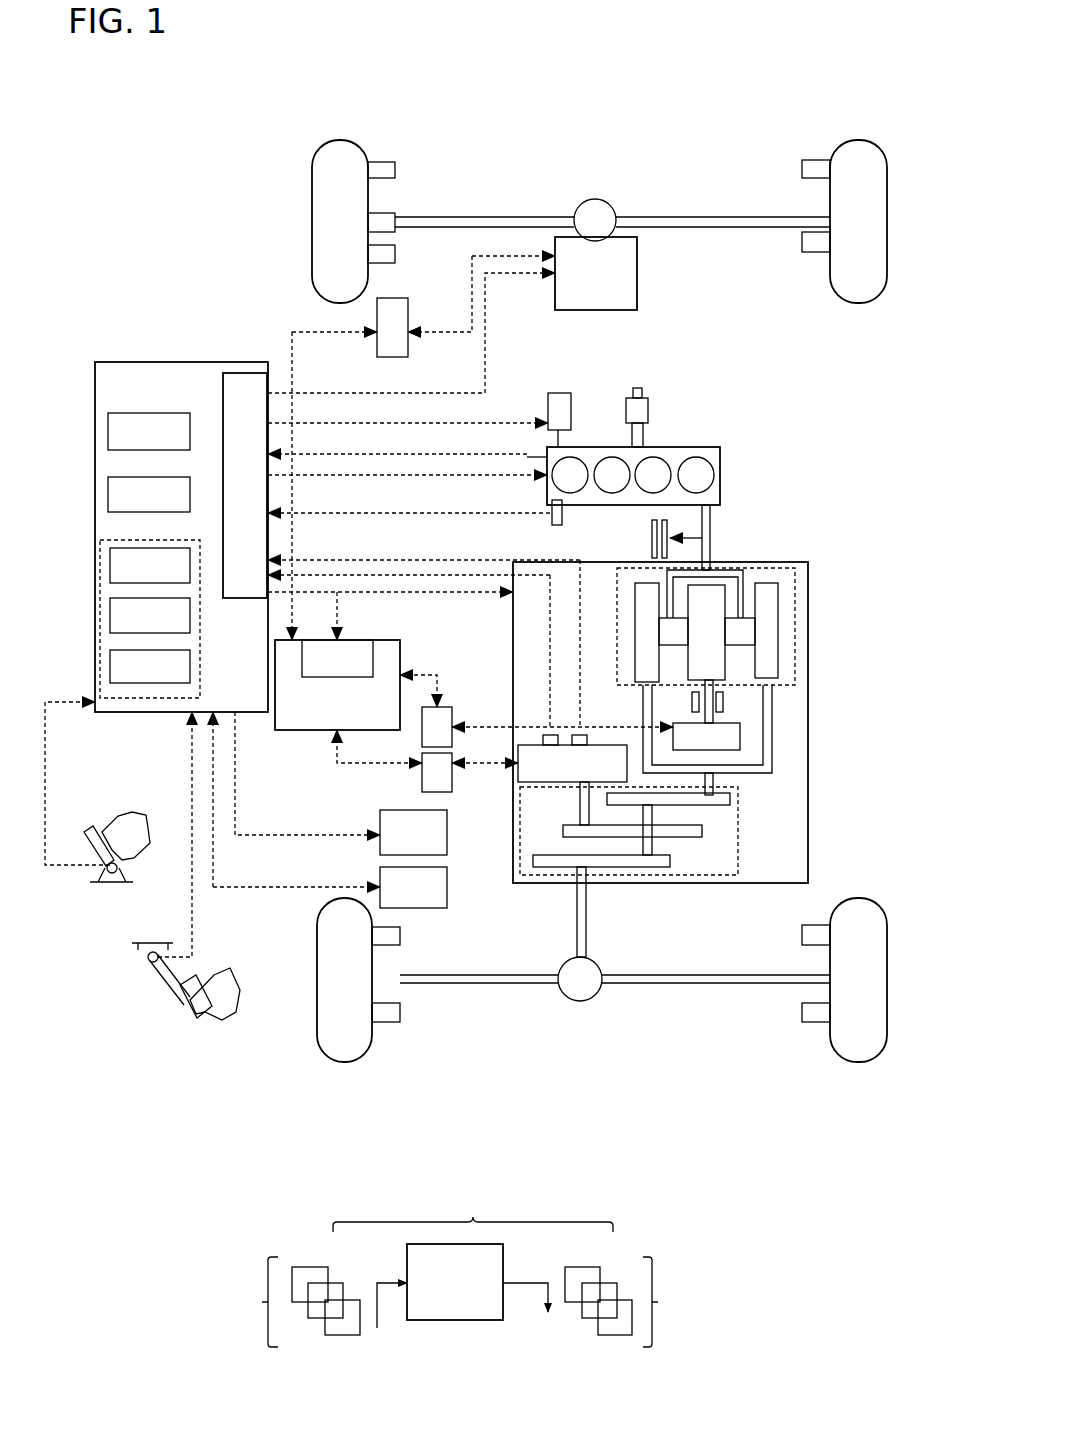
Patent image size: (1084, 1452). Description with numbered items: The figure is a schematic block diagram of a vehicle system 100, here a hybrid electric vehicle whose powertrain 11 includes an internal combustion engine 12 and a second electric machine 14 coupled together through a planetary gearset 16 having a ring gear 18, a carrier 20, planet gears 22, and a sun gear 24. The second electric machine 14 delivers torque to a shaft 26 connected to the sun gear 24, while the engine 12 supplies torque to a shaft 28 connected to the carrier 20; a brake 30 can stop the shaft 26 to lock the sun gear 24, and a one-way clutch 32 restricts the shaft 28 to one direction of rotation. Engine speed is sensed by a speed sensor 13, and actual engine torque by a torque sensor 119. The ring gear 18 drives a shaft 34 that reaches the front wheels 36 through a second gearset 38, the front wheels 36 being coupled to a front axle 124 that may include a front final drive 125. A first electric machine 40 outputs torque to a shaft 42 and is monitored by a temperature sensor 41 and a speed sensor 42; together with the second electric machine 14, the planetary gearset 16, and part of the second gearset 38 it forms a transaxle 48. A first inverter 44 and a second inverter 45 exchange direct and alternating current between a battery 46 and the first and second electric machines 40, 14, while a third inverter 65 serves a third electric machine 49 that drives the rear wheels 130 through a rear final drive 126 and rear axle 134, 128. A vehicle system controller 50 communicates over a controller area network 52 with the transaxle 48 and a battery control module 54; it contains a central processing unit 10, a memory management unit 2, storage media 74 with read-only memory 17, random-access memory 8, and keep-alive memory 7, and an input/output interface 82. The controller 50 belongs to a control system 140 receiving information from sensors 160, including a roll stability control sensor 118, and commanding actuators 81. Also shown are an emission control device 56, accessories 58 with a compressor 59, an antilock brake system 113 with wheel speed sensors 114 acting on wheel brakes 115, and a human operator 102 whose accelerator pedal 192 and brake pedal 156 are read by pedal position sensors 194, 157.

The vehicle system 100 is at (848, 32).
The vehicle powertrain 11 is at (905, 415).
The internal combustion engine 12 is at (710, 447).
The speed sensor 13 is at (527, 457).
The second electric machine 14 is at (742, 735).
The planetary gearset 16 is at (795, 598).
The ring gear 18 is at (778, 660).
The carrier 20 is at (735, 568).
The planet gears 22 is at (745, 635).
The sun gear 24 is at (762, 680).
The shaft 26 is at (750, 725).
The shaft 28 is at (710, 530).
The brake 30 is at (767, 708).
The one-way clutch 32 is at (652, 538).
The shaft 34 is at (713, 785).
The front wheels 36 is at (317, 960).
The second gearset 38 is at (738, 852).
The first electric machine 40 is at (518, 772).
The temperature sensor 41 is at (548, 735).
The speed sensor 42 is at (582, 735).
The first inverter 44 is at (422, 767).
The second inverter 45 is at (450, 707).
The battery 46 is at (302, 731).
The transaxle 48 is at (808, 862).
The third electric machine 49 is at (637, 265).
The vehicle system controller 50 is at (138, 362).
The controller area network 52 is at (398, 393).
The battery control module 54 is at (345, 640).
The emission control device 56 is at (648, 405).
The accessories 58 is at (572, 398).
The compressor 59 is at (552, 397).
The third inverter 65 is at (392, 298).
The computer-readable storage media 74 is at (160, 700).
The actuators 81 is at (659, 1302).
The input/output interface 82 is at (234, 373).
The memory management unit 2 is at (108, 495).
The keep-alive memory 7 is at (110, 668).
The random-access memory 8 is at (110, 565).
The central processing unit 10 is at (108, 428).
The read-only memory 17 is at (110, 615).
The human operator 102 is at (130, 835).
The antilock brake system 113 is at (341, 783).
The wheel speed sensors 114 is at (395, 170).
The wheel brakes 115 is at (395, 253).
The roll stability control sensor 118 is at (330, 810).
The torque sensor 119 is at (555, 525).
The front axle 124 is at (675, 985).
The front final drive 125 is at (573, 998).
The rear final drive 126 is at (600, 200).
The rear axle 128 is at (487, 217).
The rear wheels 130 is at (312, 195).
The rear axle 134 is at (385, 213).
The control system 140 is at (473, 1245).
The brake pedal 156 is at (180, 1010).
The pedal position sensor 157 is at (150, 952).
The sensors 160 is at (271, 1302).
The pedal 192 is at (100, 860).
The pedal position sensor 194 is at (118, 868).